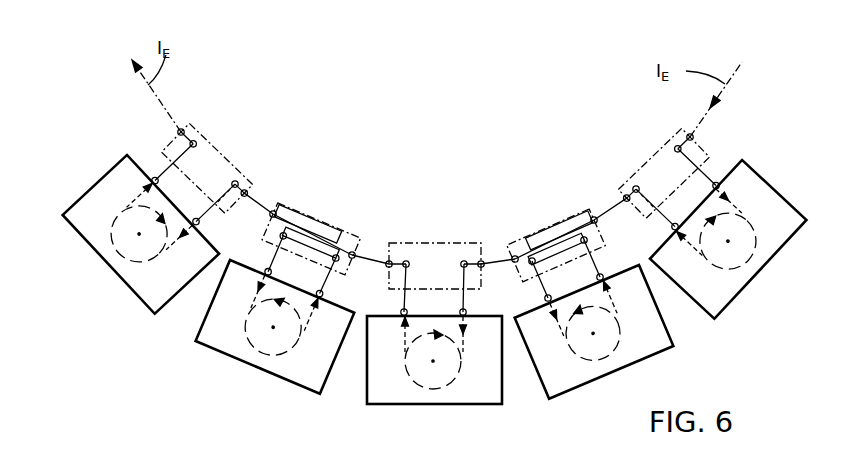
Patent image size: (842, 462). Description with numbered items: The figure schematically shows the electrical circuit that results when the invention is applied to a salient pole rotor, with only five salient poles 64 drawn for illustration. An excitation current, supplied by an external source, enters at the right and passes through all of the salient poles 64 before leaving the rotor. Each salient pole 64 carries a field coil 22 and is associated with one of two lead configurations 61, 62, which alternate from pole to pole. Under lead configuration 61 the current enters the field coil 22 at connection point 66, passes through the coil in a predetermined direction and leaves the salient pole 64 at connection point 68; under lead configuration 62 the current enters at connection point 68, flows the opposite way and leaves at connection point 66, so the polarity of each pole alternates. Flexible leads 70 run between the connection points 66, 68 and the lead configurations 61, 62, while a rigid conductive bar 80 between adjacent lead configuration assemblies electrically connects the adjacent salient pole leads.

The field coil 22 is at (116, 220).
The lead configuration 61 is at (224, 150).
The lead configuration 62 is at (317, 213).
The salient pole 64 is at (150, 316).
The connection point 66 is at (199, 225).
The connection point 68 is at (154, 177).
The flexible lead 70 is at (224, 194).
The rigid conductive bar 80 is at (260, 204).